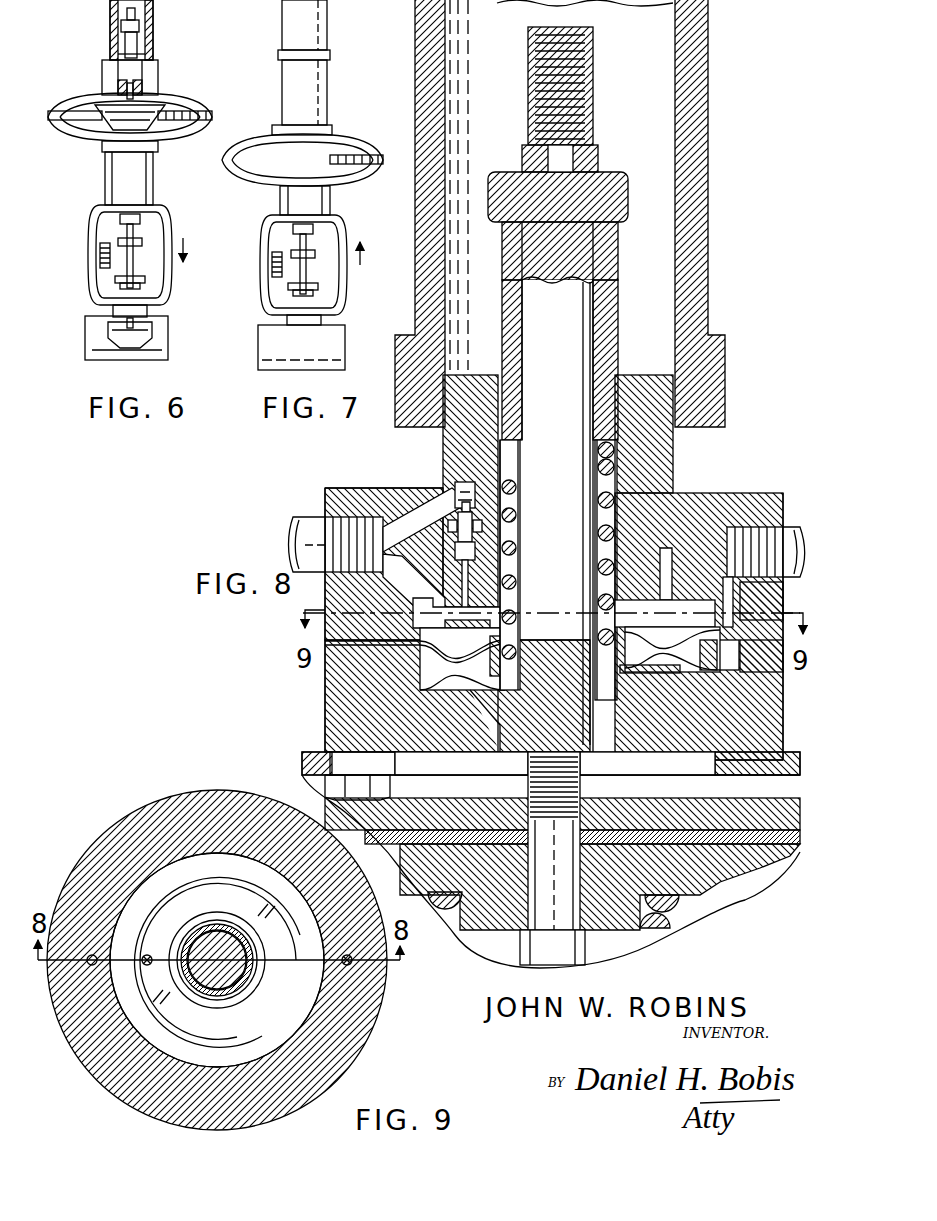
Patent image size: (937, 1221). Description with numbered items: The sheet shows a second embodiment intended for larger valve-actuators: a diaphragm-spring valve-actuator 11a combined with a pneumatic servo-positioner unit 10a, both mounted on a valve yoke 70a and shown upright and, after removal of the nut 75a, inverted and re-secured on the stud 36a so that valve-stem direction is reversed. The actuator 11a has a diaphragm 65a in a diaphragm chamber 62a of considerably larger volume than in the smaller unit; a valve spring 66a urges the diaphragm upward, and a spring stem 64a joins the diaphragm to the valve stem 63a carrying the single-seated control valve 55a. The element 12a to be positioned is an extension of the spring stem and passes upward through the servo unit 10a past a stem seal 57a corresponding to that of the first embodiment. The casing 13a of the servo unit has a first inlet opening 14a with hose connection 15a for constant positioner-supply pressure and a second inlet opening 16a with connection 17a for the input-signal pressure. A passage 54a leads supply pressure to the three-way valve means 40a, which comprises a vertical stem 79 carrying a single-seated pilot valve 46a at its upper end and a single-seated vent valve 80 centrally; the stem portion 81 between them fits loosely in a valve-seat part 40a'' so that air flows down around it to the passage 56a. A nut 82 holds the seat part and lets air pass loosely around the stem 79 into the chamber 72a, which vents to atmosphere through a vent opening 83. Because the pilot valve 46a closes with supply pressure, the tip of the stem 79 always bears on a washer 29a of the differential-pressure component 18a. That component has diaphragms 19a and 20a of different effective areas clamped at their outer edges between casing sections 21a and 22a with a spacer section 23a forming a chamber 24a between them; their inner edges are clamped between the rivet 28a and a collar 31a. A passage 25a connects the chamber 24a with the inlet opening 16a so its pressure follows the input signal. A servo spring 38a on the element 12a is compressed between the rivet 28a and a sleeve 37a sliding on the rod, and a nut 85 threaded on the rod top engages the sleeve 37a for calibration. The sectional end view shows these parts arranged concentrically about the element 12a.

In FIG. 6, the pneumatic servo-positioner unit 10a is at (160, 73).
In FIG. 7, the pneumatic servo-positioner unit 10a is at (333, 190).
In FIG. 8, the pneumatic servo-positioner unit 10a is at (322, 494).
In FIG. 6, the diaphragm-spring valve-actuator 11a is at (155, 182).
In FIG. 7, the diaphragm-spring valve-actuator 11a is at (330, 90).
In FIG. 6, the element to be positioned 12a is at (128, 92).
In FIG. 8, the element to be positioned 12a is at (568, 318).
In FIG. 9, the element to be positioned 12a is at (240, 960).
In FIG. 8, the casing 13a is at (712, 492).
In FIG. 8, the first inlet opening 14a is at (360, 518).
In FIG. 8, the hose connection 15a is at (300, 530).
In FIG. 8, the second inlet opening 16a is at (790, 532).
In FIG. 8, the connection 17a is at (800, 527).
In FIG. 8, the differential-pressure component 18a is at (645, 680).
In FIG. 8, the diaphragm 19a is at (457, 659).
In FIG. 9, the diaphragm 19a is at (178, 870).
In FIG. 8, the diaphragm 20a is at (655, 668).
In FIG. 8, the casing section 21a is at (770, 604).
In FIG. 9, the casing section 21a is at (330, 1040).
In FIG. 8, the casing section 22a is at (770, 715).
In FIG. 8, the interposed section 23a is at (770, 672).
In FIG. 8, the chamber 24a is at (400, 665).
In FIG. 8, the passage 25a is at (733, 600).
In FIG. 9, the passage 25a is at (352, 966).
In FIG. 8, the rivet 28a is at (506, 650).
In FIG. 8, the washer 29a is at (663, 611).
In FIG. 9, the washer 29a is at (247, 1040).
In FIG. 8, the collar 31a is at (470, 680).
In FIG. 8, the stud 36a is at (660, 447).
In FIG. 8, the sleeve 37a is at (504, 298).
In FIG. 8, the servo spring 38a is at (512, 480).
In FIG. 9, the servo spring 38a is at (208, 925).
In FIG. 8, the three-way valve means 40a is at (426, 472).
In FIG. 8, the valve-seat part 40a'' is at (515, 538).
In FIG. 8, the single-seated pilot valve 46a is at (472, 504).
In FIG. 8, the passage 54a is at (405, 502).
In FIG. 6, the control valve 55a is at (152, 330).
In FIG. 8, the passage 56a is at (403, 712).
In FIG. 9, the passage 56a is at (94, 955).
In FIG. 8, the stem seal 57a is at (615, 775).
In FIG. 8, the diaphragm chamber 62a is at (332, 792).
In FIG. 6, the valve stem 63a is at (128, 266).
In FIG. 7, the valve stem 63a is at (320, 286).
In FIG. 8, the spring stem 64a is at (520, 946).
In FIG. 6, the diaphragm 65a is at (165, 100).
In FIG. 8, the diaphragm 65a is at (768, 868).
In FIG. 6, the valve spring 66a is at (155, 124).
In FIG. 8, the valve spring 66a is at (680, 905).
In FIG. 6, the valve yoke 70a is at (166, 224).
In FIG. 7, the valve yoke 70a is at (341, 228).
In FIG. 8, the chamber 72a is at (413, 606).
In FIG. 6, the nut 75a is at (96, 214).
In FIG. 7, the nut 75a is at (268, 218).
In FIG. 8, the stem 79 is at (470, 604).
In FIG. 9, the stem 79 is at (148, 955).
In FIG. 8, the single-seated vent valve 80 is at (476, 560).
In FIG. 8, the stem portion 81 is at (473, 526).
In FIG. 8, the nut 82 is at (492, 625).
In FIG. 8, the vent opening 83 is at (672, 574).
In FIG. 9, the vent opening 83 is at (265, 953).
In FIG. 8, the nut 85 is at (612, 178).